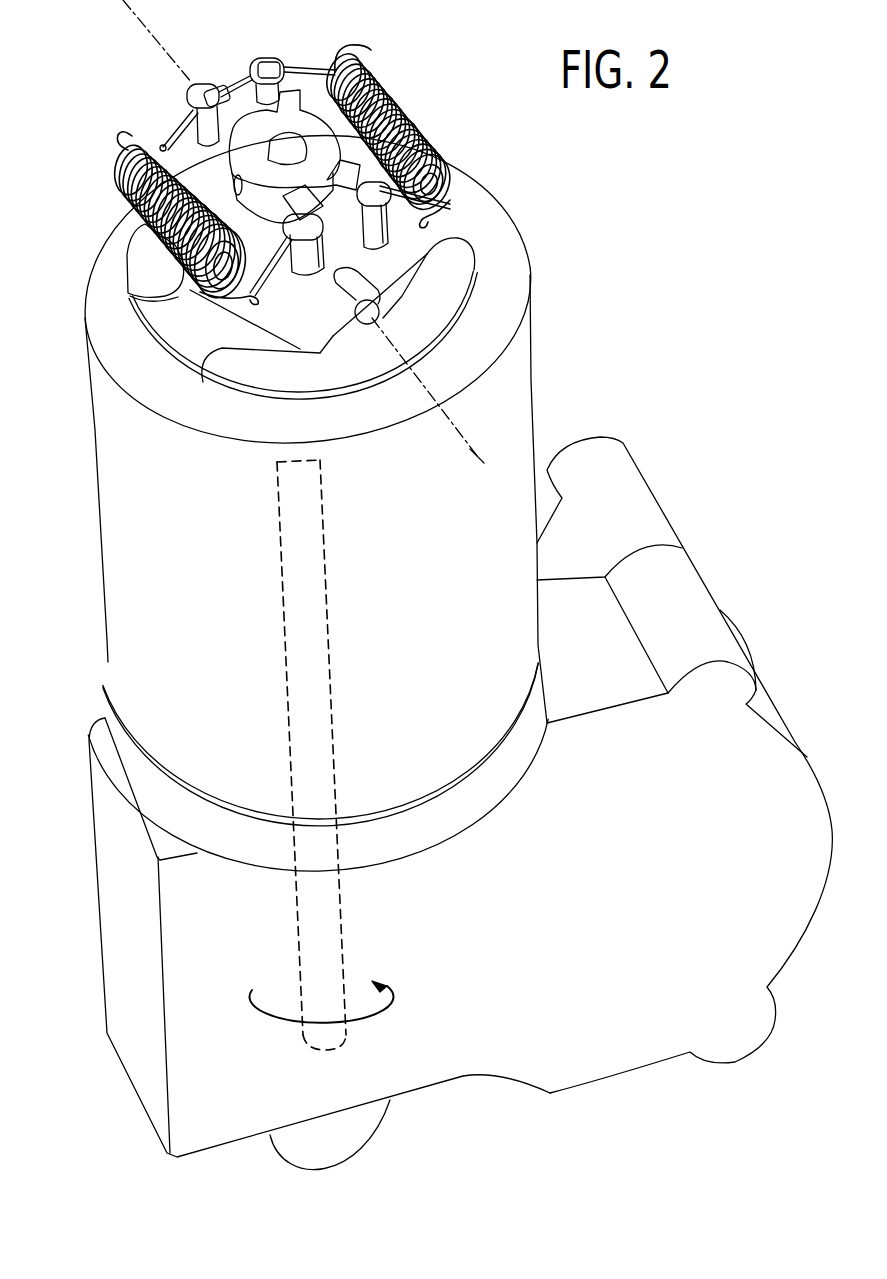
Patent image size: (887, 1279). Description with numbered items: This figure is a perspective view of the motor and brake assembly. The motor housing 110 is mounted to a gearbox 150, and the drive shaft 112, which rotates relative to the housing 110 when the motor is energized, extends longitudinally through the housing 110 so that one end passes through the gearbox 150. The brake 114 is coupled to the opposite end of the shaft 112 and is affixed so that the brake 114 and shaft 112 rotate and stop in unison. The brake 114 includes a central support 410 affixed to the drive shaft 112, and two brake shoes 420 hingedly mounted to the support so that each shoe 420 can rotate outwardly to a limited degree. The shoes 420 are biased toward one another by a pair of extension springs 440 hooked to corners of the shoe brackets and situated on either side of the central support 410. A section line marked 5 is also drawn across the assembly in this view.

The section line 5- 5 is at (125, 9).
The motor housing 110 is at (531, 381).
The drive shaft 112 is at (280, 577).
The brake 114 is at (443, 70).
The gearbox 150 is at (662, 502).
The central support 410 is at (295, 93).
The brake shoes 420 is at (173, 125).
The extension springs 440 is at (125, 163).